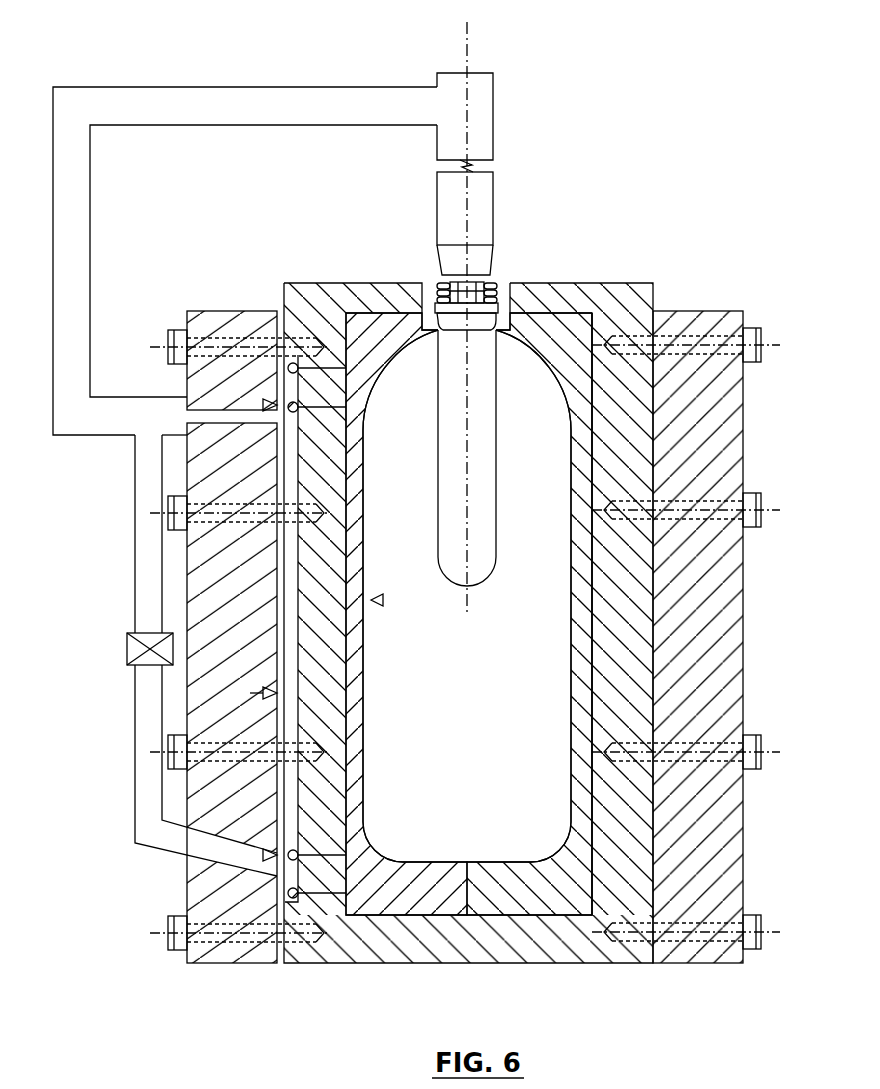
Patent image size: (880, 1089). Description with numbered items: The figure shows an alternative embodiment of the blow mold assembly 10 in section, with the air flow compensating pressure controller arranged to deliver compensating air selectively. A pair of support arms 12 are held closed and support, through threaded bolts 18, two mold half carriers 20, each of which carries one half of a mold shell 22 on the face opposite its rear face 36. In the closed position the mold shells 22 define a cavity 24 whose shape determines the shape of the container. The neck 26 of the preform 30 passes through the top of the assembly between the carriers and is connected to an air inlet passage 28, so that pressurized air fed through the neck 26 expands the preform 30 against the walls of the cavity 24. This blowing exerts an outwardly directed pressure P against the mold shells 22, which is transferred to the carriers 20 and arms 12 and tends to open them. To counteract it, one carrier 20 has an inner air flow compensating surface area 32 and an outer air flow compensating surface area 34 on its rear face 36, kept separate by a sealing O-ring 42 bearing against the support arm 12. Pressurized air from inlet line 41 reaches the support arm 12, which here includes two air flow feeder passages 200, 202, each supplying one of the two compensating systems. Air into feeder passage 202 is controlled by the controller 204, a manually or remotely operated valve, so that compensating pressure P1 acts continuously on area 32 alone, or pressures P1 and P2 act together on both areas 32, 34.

The mold assembly 10 is at (138, 225).
The support arms 12 is at (187, 724).
The threaded bolts 18 is at (167, 345).
The mold half carriers 20 is at (340, 298).
The mold shell 22 is at (366, 563).
The cavity 24 is at (416, 710).
The neck 26 is at (497, 281).
The air inlet passage 28 is at (484, 92).
The preform 30 is at (630, 353).
The inner air flow compensating surface area 32 is at (292, 600).
The outer air flow compensating surface area 34 is at (287, 389).
The rear face 36 is at (282, 298).
The inlet line 41 is at (202, 104).
The sealing O-ring 42 is at (300, 412).
The air flow feeder passage 200 is at (203, 418).
The air flow feeder passage 202 is at (193, 843).
The air flow compensating pressure controller 204 is at (134, 650).
The outwardly directed pressure P is at (383, 600).
The compensating air pressure P1 is at (252, 693).
The compensating air pressure P2 is at (264, 405).